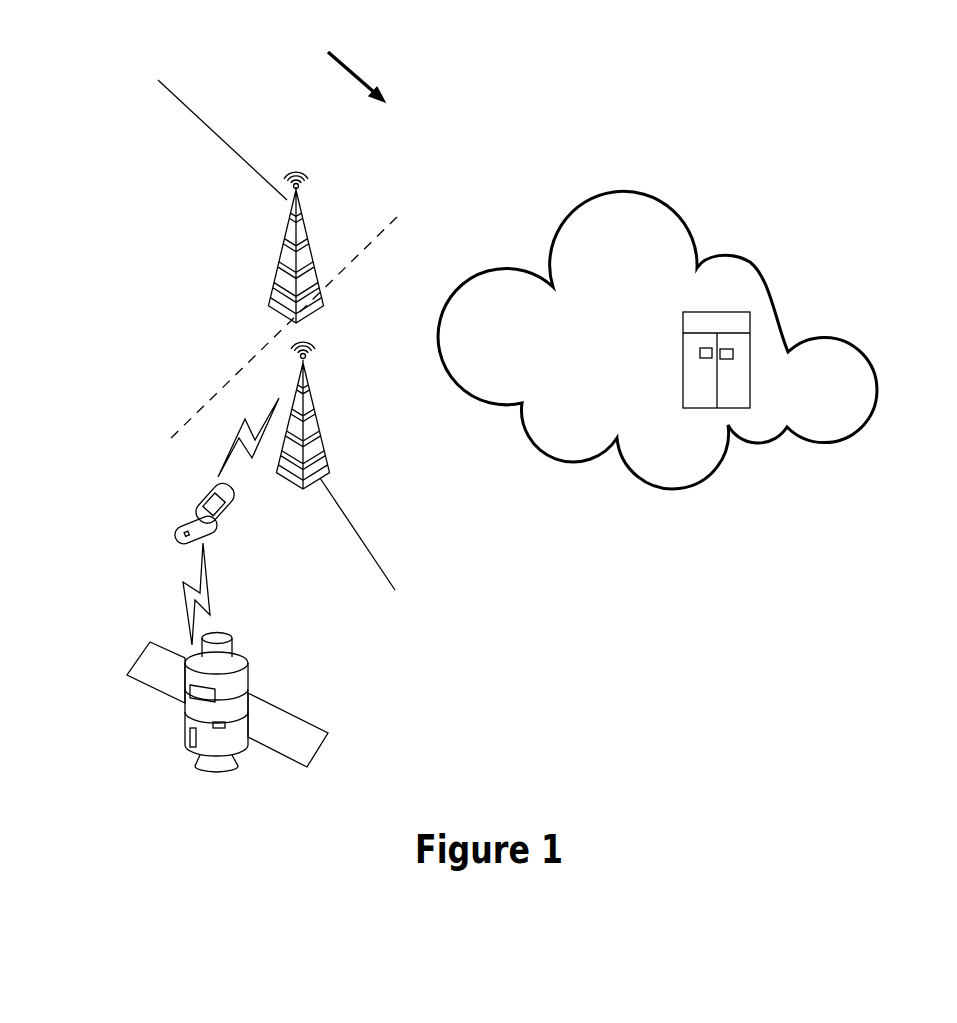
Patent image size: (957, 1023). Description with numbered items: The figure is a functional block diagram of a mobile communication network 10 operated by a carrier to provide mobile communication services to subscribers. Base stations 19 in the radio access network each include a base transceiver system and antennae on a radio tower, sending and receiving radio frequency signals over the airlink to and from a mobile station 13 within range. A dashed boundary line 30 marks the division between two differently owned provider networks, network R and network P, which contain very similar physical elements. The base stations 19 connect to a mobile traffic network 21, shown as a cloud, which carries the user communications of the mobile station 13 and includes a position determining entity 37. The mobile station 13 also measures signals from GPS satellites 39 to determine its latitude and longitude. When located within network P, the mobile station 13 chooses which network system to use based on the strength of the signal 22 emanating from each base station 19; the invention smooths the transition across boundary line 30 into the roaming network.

The mobile communication network 10 is at (337, 68).
The signal 22 is at (240, 234).
The boundary line 30 is at (161, 407).
The base station 19 is at (303, 230).
The mobile station 13 is at (183, 523).
The GPS satellite 39 is at (185, 722).
The mobile traffic network 21 is at (635, 261).
The position determining entity 37 is at (737, 377).